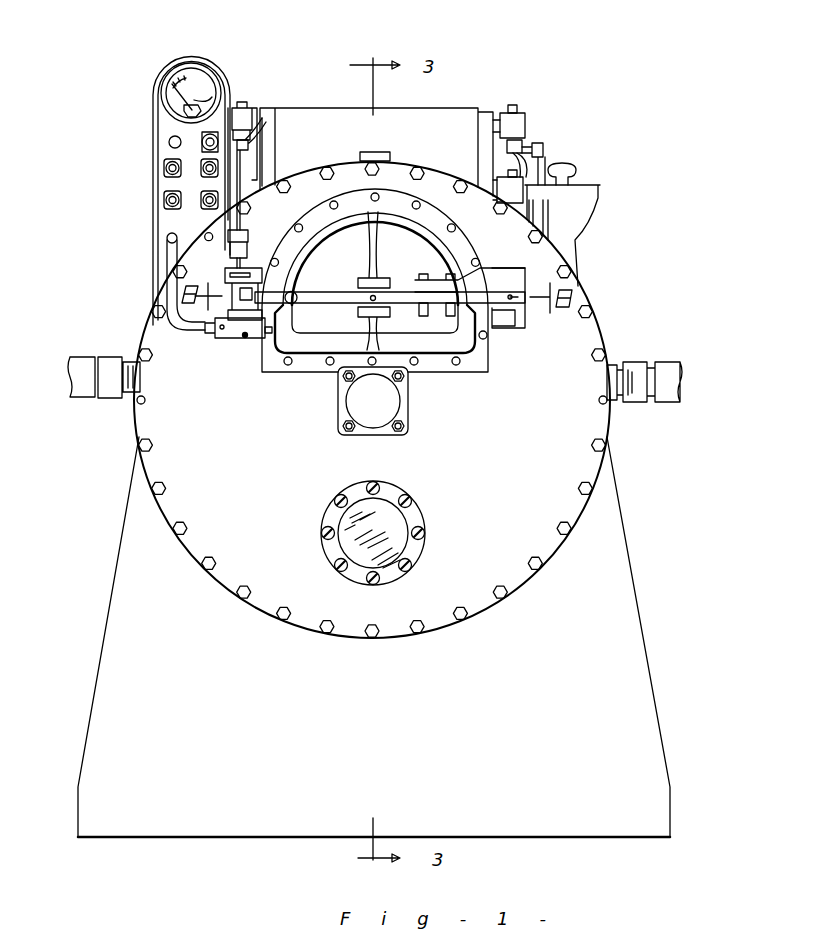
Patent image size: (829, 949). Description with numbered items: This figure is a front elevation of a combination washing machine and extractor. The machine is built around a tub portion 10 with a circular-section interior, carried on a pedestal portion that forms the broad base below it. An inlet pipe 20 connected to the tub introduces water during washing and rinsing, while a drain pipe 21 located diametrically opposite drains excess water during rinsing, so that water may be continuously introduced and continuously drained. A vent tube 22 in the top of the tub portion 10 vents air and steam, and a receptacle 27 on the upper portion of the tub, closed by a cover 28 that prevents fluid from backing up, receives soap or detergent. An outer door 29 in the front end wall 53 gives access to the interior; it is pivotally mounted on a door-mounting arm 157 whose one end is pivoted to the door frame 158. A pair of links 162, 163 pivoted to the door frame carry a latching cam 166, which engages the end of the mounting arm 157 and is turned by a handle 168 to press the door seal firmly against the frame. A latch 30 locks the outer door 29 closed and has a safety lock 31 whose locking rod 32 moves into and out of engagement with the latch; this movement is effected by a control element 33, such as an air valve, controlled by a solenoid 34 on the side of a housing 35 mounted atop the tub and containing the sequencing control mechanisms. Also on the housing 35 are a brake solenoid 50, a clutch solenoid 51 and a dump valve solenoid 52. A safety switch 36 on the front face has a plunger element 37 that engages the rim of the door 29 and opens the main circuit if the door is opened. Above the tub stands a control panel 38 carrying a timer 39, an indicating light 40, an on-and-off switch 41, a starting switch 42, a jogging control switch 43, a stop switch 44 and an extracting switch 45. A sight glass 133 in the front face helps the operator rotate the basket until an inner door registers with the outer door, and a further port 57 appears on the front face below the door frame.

The tub portion 10 is at (578, 288).
The inlet pipe 20 is at (682, 360).
The drain pipe 21 is at (76, 360).
The vent tube 22 is at (364, 152).
The receptacle 27 is at (598, 192).
The cover 28 is at (577, 185).
The outer door 29 is at (439, 337).
The latch 30 is at (220, 316).
The safety lock 31 is at (245, 238).
The locking rod 32 is at (228, 262).
The control element 33 is at (235, 105).
The solenoid 34 is at (265, 130).
The housing 35 is at (313, 112).
The safety switch 36 is at (220, 336).
The plunger element 37 is at (258, 340).
The control panel 38 is at (163, 72).
The timer 39 is at (186, 76).
The indicating light 40 is at (168, 142).
The on-and-off switch 41 is at (204, 140).
The starting switch 42 is at (164, 168).
The jogging control switch 43 is at (201, 170).
The stop switch 44 is at (164, 200).
The extracting switch 45 is at (201, 204).
The brake solenoid 50 is at (256, 178).
The clutch solenoid 51 is at (520, 120).
The dump valve solenoid 52 is at (543, 152).
The end wall 53 is at (572, 336).
The port 57 is at (357, 400).
The sight glass 133 is at (393, 523).
The door-mounting arm 157 is at (392, 294).
The door frame 158 is at (517, 329).
The link 162 is at (281, 272).
The link 163 is at (262, 314).
The latching cam 166 is at (240, 336).
The handle 168 is at (294, 293).